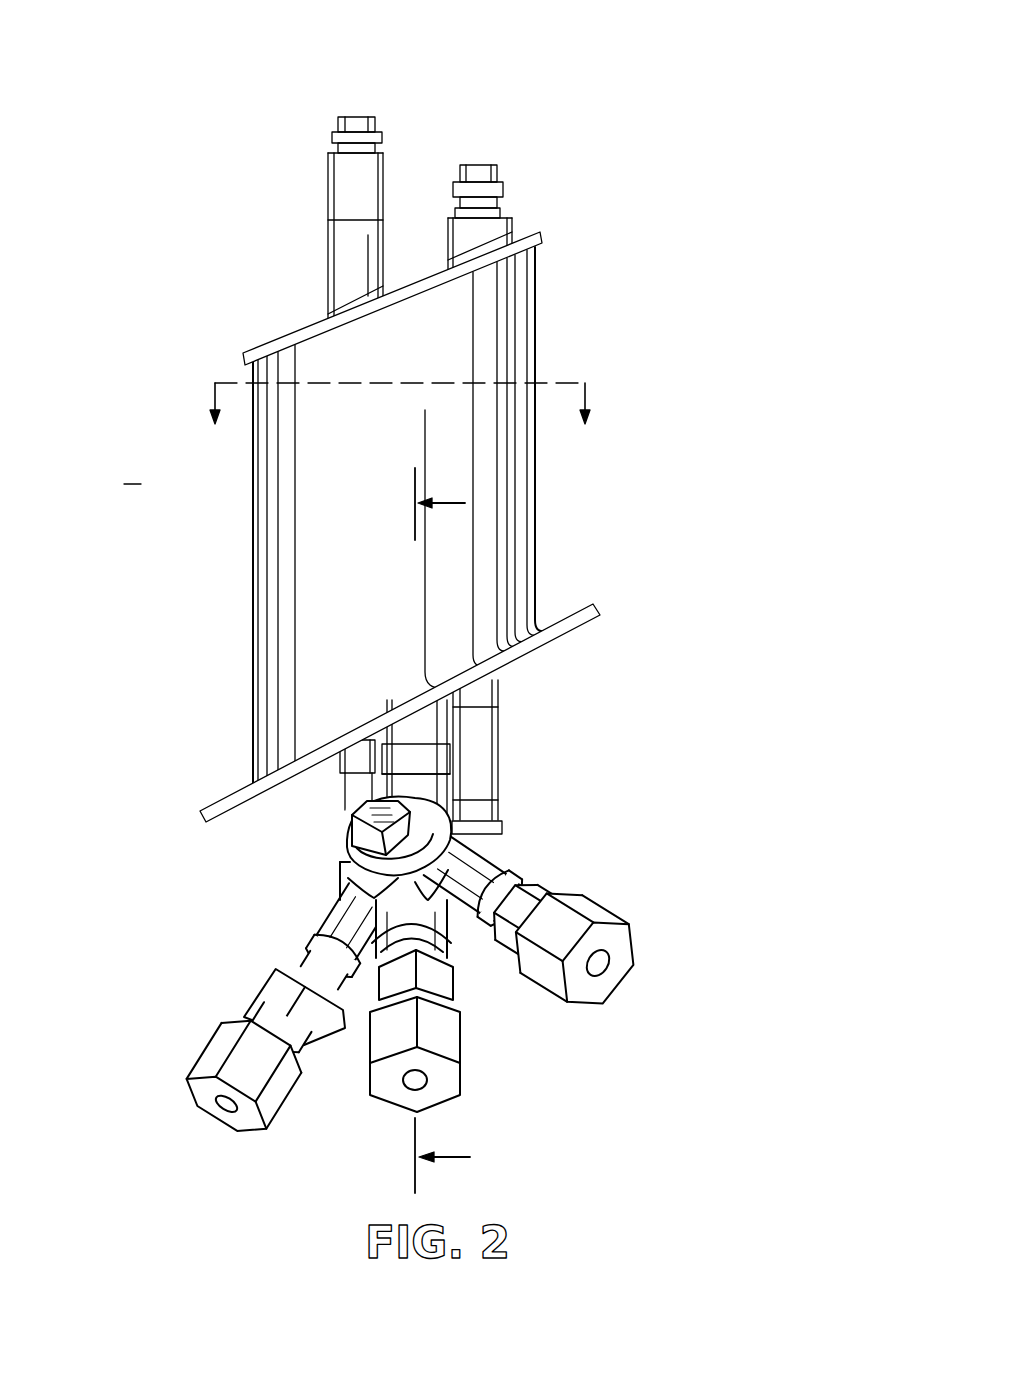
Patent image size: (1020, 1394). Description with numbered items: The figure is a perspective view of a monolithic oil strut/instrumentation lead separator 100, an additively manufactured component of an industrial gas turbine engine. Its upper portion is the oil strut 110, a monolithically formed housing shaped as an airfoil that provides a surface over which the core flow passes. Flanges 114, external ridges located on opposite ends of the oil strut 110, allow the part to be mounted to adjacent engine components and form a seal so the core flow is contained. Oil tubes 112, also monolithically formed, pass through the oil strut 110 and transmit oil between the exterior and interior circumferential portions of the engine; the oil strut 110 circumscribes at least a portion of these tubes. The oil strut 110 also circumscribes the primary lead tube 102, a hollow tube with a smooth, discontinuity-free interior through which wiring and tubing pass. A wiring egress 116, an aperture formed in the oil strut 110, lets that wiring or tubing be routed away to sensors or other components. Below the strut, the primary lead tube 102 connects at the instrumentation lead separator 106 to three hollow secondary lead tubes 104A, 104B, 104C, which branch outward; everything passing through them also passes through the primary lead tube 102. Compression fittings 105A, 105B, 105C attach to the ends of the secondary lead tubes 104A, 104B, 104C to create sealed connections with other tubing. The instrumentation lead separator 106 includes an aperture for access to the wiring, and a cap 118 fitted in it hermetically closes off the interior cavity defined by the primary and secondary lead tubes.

The monolithic oil strut/instrumentation lead separator 100 is at (450, 618).
The primary lead tube 102 is at (413, 732).
The secondary lead tube 104A is at (318, 968).
The secondary lead tube 104B is at (430, 942).
The secondary lead tube 104C is at (480, 872).
The compression fitting 105A is at (208, 1052).
The compression fitting 105B is at (452, 1048).
The compression fitting 105C is at (588, 906).
The instrumentation lead separator 106 is at (405, 964).
The oil strut 110 is at (537, 468).
The oil tubes 112 is at (363, 117).
The flanges 114 is at (249, 350).
The wiring egress 116 is at (405, 273).
The cap 118 is at (360, 840).